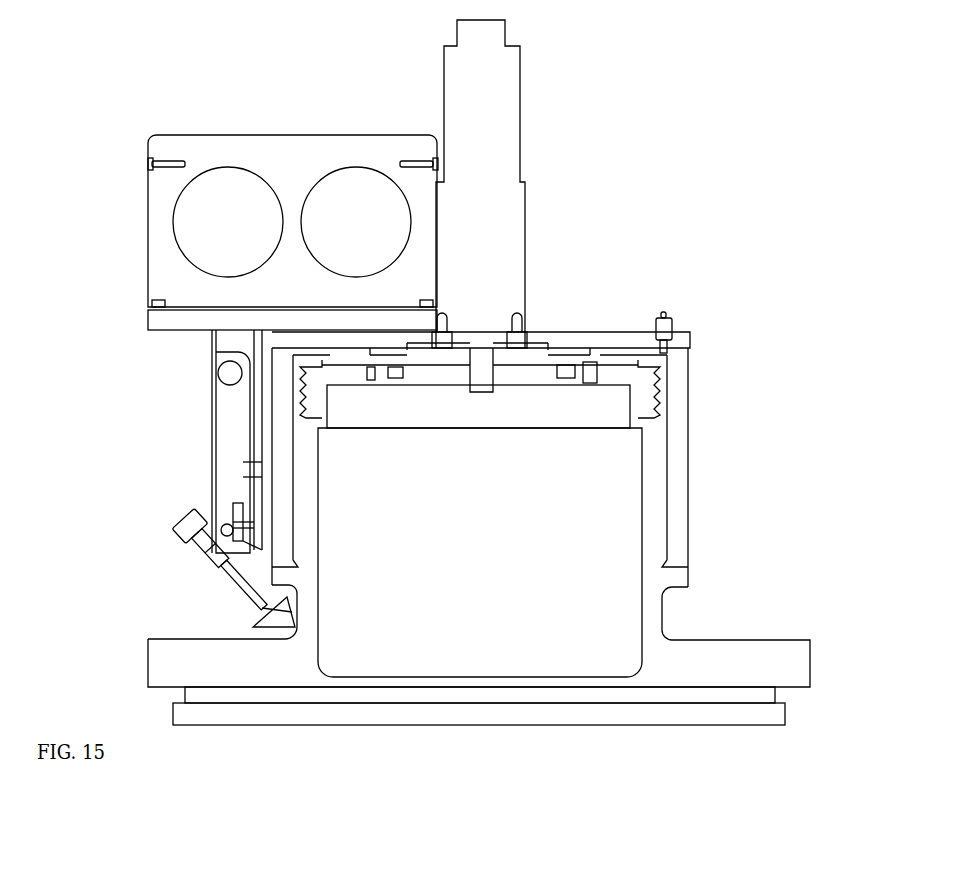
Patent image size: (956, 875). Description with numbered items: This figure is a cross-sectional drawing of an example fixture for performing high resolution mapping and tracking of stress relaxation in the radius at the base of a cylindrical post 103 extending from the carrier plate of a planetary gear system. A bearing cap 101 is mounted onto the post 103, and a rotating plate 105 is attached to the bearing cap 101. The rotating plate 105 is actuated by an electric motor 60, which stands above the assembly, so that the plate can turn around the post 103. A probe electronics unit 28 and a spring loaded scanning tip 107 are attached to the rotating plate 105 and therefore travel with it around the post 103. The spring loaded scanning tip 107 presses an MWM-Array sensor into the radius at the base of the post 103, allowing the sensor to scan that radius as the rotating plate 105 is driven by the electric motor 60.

The probe electronics unit 28 is at (200, 148).
The electric motor 60 is at (488, 140).
The bearing cap 101 is at (680, 432).
The post 103 is at (652, 518).
The rotating plate 105 is at (588, 333).
The spring loaded scanning tip 107 is at (268, 613).